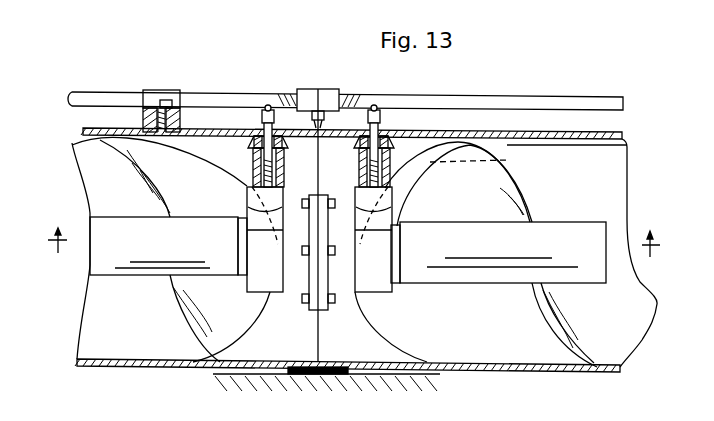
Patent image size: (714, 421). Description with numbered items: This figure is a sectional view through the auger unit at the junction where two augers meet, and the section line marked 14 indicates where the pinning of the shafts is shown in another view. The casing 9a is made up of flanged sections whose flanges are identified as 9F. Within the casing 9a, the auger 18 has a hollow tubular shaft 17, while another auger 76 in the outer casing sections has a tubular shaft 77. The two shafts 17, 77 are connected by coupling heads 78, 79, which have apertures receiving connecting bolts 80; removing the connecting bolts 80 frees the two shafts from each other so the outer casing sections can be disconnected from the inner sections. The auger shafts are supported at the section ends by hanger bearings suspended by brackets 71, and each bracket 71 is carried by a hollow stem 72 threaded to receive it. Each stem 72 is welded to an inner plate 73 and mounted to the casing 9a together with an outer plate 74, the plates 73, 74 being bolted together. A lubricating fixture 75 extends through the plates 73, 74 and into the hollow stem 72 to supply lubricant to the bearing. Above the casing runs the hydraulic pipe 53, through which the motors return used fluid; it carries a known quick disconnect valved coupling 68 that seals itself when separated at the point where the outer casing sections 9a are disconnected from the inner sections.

The pipe 53 is at (104, 93).
The quick disconnect valved coupling 68 is at (330, 89).
The flange 9F is at (316, 127).
The outer plate 74 is at (236, 131).
The lubricating fixture 75 is at (262, 119).
The inner plate 73 is at (253, 140).
The hollow stem 72 is at (280, 168).
The bracket 71 is at (265, 293).
The coupling head 78 is at (328, 311).
The connecting bolt 80 is at (305, 204).
The coupling head 79 is at (316, 311).
The auger 76 is at (236, 294).
The shaft 77 is at (170, 250).
The hollow shaft 17 is at (494, 253).
The auger 18 is at (483, 188).
The casing 9a is at (135, 368).
The section line 14 is at (355, 246).